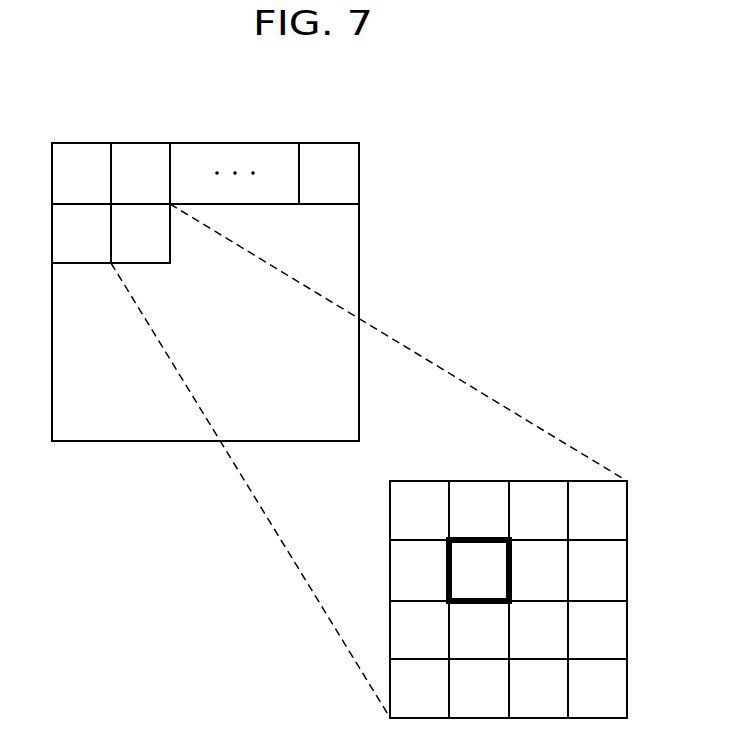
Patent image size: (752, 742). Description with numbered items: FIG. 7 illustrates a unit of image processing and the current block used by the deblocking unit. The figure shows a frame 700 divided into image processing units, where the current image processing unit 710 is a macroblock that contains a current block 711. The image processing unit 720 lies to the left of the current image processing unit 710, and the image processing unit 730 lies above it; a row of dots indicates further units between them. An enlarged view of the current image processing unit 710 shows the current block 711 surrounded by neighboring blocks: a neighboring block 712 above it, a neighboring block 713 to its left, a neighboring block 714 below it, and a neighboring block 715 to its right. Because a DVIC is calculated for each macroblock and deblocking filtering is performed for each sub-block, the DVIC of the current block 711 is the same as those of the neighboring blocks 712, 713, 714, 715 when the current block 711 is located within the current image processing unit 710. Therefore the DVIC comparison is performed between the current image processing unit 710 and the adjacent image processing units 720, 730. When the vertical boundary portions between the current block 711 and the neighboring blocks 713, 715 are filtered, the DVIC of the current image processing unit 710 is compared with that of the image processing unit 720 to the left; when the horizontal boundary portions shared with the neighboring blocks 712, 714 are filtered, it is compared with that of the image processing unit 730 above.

The image frame 700 is at (440, 200).
The current image processing unit 710 is at (173, 263).
The current block 711 is at (477, 537).
The neighboring block 712 is at (479, 481).
The neighboring block 713 is at (389, 570).
The neighboring block 714 is at (510, 637).
The neighboring block 715 is at (568, 572).
The image processing unit 720 is at (81, 263).
The image processing unit 730 is at (141, 143).